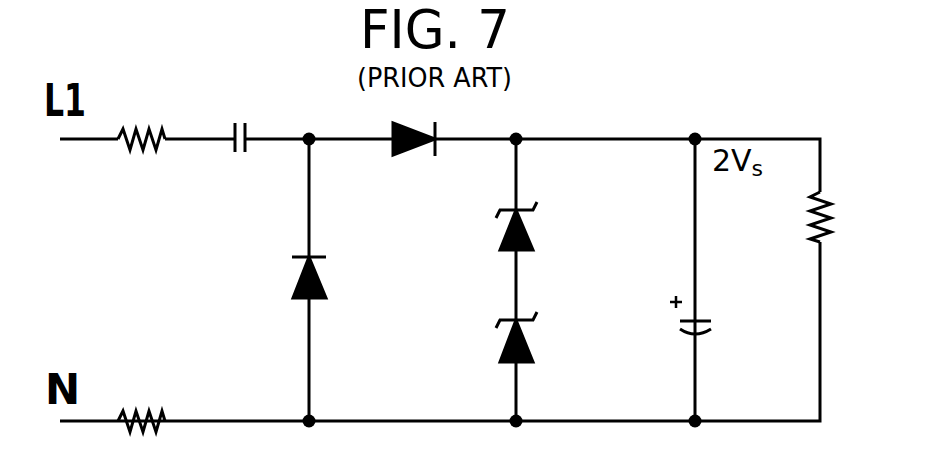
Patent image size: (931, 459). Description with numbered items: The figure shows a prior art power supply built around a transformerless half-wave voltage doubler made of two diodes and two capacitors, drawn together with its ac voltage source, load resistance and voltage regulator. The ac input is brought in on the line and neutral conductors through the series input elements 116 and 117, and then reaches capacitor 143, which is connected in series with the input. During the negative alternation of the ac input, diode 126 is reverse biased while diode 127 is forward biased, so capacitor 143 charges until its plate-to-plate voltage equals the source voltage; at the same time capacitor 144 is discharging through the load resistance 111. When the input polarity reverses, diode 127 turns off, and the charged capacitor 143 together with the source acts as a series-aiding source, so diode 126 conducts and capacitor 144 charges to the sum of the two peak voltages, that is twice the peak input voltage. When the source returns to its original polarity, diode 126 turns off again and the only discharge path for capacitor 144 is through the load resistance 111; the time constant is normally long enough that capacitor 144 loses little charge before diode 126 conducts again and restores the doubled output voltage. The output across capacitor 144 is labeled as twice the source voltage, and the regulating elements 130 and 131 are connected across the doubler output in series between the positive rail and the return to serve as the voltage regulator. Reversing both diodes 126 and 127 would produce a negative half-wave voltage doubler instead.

The resistor 116 is at (141, 158).
The capacitor 143 is at (242, 156).
The diode 126 is at (412, 157).
The diode 127 is at (277, 277).
The zener diode 130 is at (487, 226).
The zener diode 131 is at (487, 337).
The capacitor 144 is at (666, 319).
The load resistor 111 is at (788, 217).
The resistor 117 is at (139, 404).